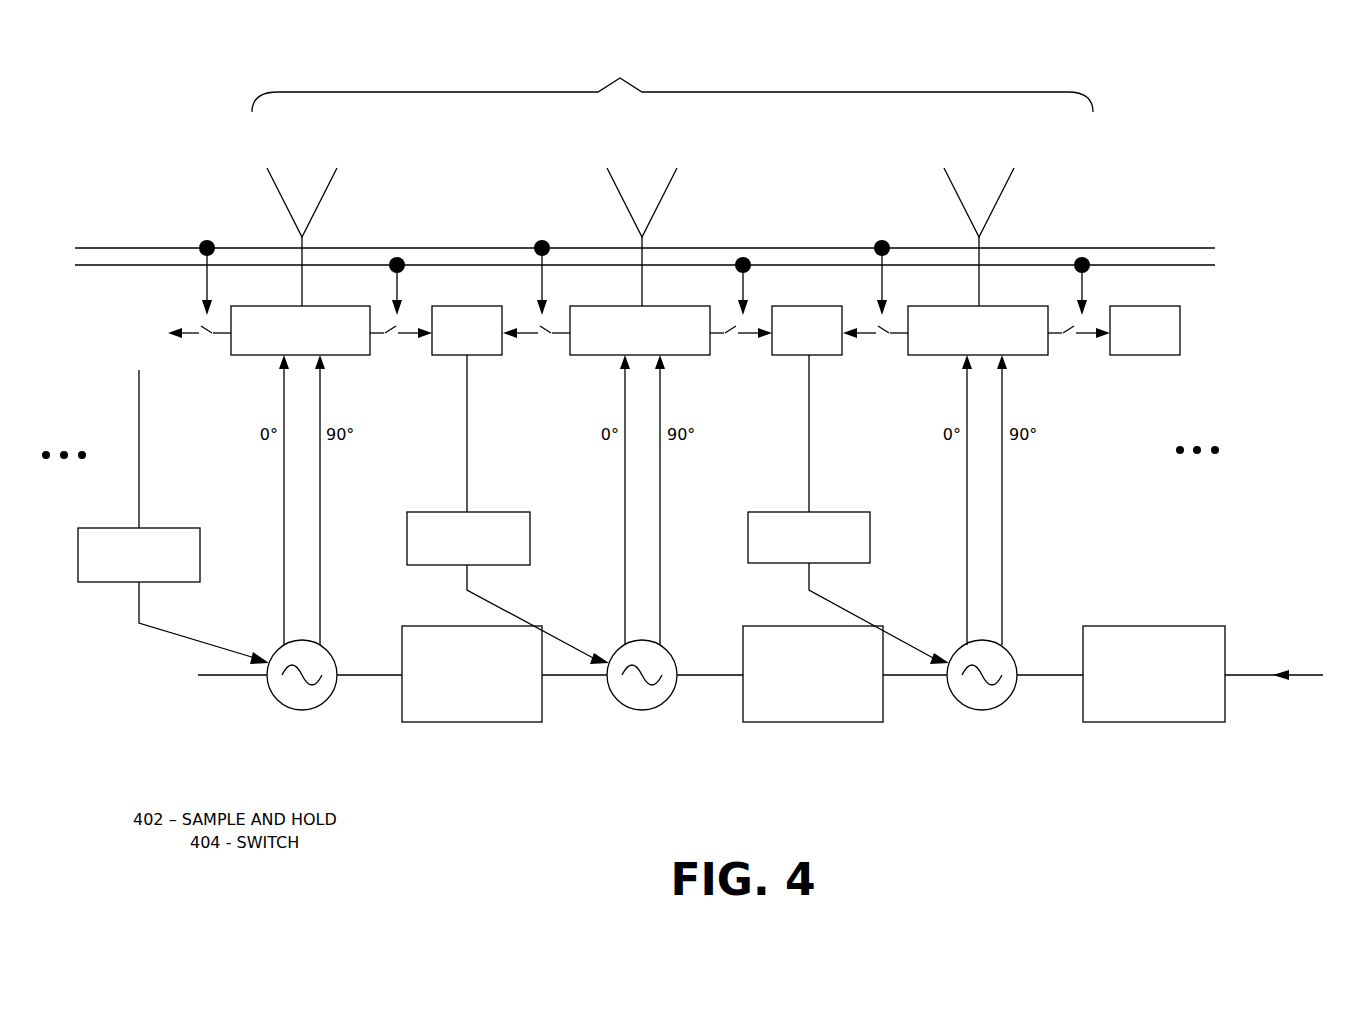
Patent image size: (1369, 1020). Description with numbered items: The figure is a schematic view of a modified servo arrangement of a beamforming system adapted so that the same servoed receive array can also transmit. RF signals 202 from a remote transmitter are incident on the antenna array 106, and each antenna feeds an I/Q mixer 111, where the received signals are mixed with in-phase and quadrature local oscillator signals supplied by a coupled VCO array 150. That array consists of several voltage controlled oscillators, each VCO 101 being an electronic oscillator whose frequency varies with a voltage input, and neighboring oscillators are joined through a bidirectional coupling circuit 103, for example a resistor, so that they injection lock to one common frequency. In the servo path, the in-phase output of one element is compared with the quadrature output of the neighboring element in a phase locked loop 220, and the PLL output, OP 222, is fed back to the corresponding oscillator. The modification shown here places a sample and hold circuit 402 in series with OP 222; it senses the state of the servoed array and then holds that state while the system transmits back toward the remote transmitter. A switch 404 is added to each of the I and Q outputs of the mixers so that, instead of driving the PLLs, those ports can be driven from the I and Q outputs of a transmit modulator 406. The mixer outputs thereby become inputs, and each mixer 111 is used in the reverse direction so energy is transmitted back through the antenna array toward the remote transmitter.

The voltage controlled oscillator 101 is at (270, 695).
The bidirectional coupling circuit 103 is at (781, 674).
The antenna array 106 is at (330, 188).
The mixer 111 is at (639, 330).
The coupled VCO array 150 is at (1323, 675).
The RF signals 202 is at (672, 77).
The phase locked loop 220 is at (806, 330).
The PLL output 222 is at (509, 441).
The sample and hold circuit 402 is at (513, 588).
The switch 404 is at (203, 338).
The transmit modulator 406 is at (706, 259).